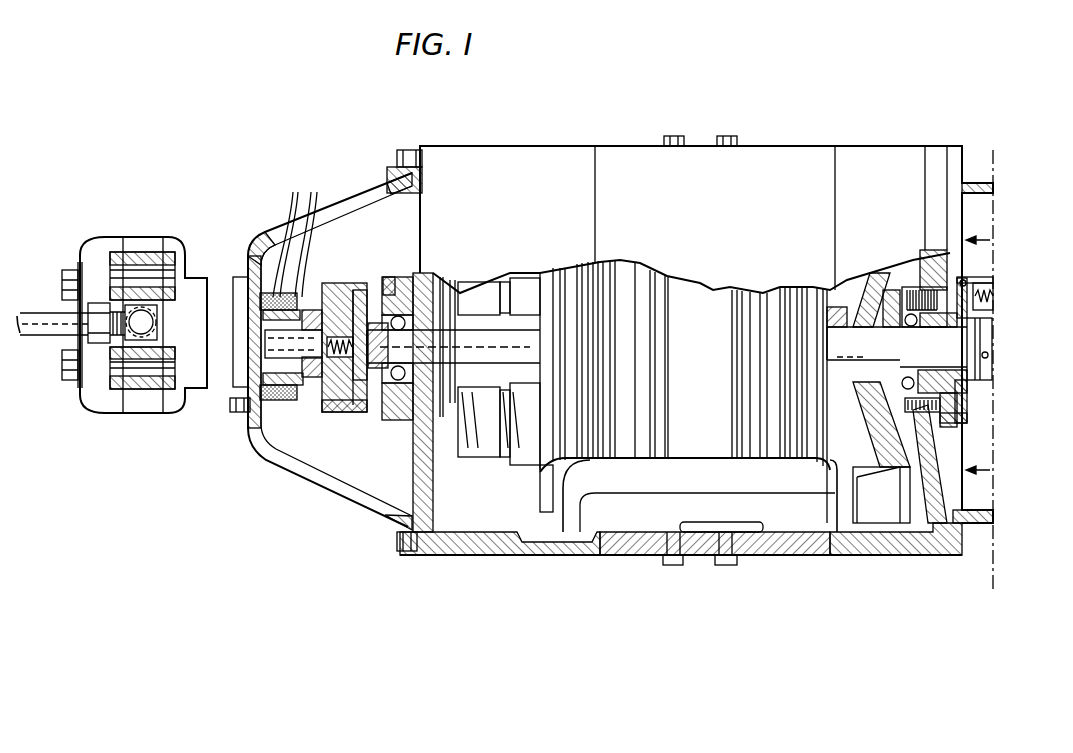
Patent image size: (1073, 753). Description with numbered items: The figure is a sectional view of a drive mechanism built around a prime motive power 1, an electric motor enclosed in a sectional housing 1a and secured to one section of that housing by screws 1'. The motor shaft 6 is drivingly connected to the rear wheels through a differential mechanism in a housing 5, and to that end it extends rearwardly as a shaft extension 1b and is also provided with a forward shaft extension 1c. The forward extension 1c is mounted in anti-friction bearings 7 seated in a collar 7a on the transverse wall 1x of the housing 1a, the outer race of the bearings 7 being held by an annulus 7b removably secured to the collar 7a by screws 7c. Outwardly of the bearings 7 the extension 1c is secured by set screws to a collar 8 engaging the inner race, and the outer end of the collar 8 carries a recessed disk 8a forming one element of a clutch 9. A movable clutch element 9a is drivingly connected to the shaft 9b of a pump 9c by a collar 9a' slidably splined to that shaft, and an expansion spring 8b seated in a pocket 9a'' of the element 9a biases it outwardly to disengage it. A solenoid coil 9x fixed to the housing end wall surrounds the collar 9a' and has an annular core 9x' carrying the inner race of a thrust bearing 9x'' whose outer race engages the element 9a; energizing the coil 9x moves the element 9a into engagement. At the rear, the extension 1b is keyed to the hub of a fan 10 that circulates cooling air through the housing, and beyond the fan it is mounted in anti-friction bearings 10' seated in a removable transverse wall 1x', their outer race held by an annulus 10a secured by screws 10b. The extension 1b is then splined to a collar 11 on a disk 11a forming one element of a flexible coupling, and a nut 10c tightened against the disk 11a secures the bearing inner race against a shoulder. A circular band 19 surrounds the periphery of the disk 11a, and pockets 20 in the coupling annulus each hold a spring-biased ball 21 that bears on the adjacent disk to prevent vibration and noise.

The prime motive power 1 is at (620, 363).
The screws 1' is at (700, 563).
The sectional housing 1a is at (493, 548).
The shaft extension 1b is at (862, 360).
The shaft extension 1c is at (443, 350).
The transverse wall 1x is at (442, 402).
The transverse wall 1x' is at (894, 495).
The housing 5 is at (985, 500).
The motor shaft 6 is at (820, 288).
The anti-friction bearings 7 is at (406, 366).
The collar 7a is at (400, 423).
The annulus 7b is at (385, 417).
The screws 7c is at (390, 278).
The collar 8 is at (460, 352).
The disk 8a is at (370, 413).
The expansion spring 8b is at (400, 343).
The clutch 9 is at (358, 286).
The movable clutch element 9a is at (295, 380).
The collar 9a' is at (286, 363).
The pocket 9a'' is at (375, 315).
The shaft 9b is at (268, 338).
The pump 9c is at (165, 436).
The solenoid coil 9x is at (318, 288).
The annular core 9x' is at (226, 408).
The thrust bearing 9x'' is at (329, 317).
The fan 10 is at (765, 405).
The anti-friction bearings 10' is at (870, 286).
The annulus 10a is at (933, 290).
The screws 10b is at (940, 405).
The nut 10c is at (977, 343).
The collar 11 is at (983, 377).
The disk 11a is at (967, 386).
The circular band 19 is at (980, 278).
The pockets 20 is at (983, 283).
The ball 21 is at (988, 305).